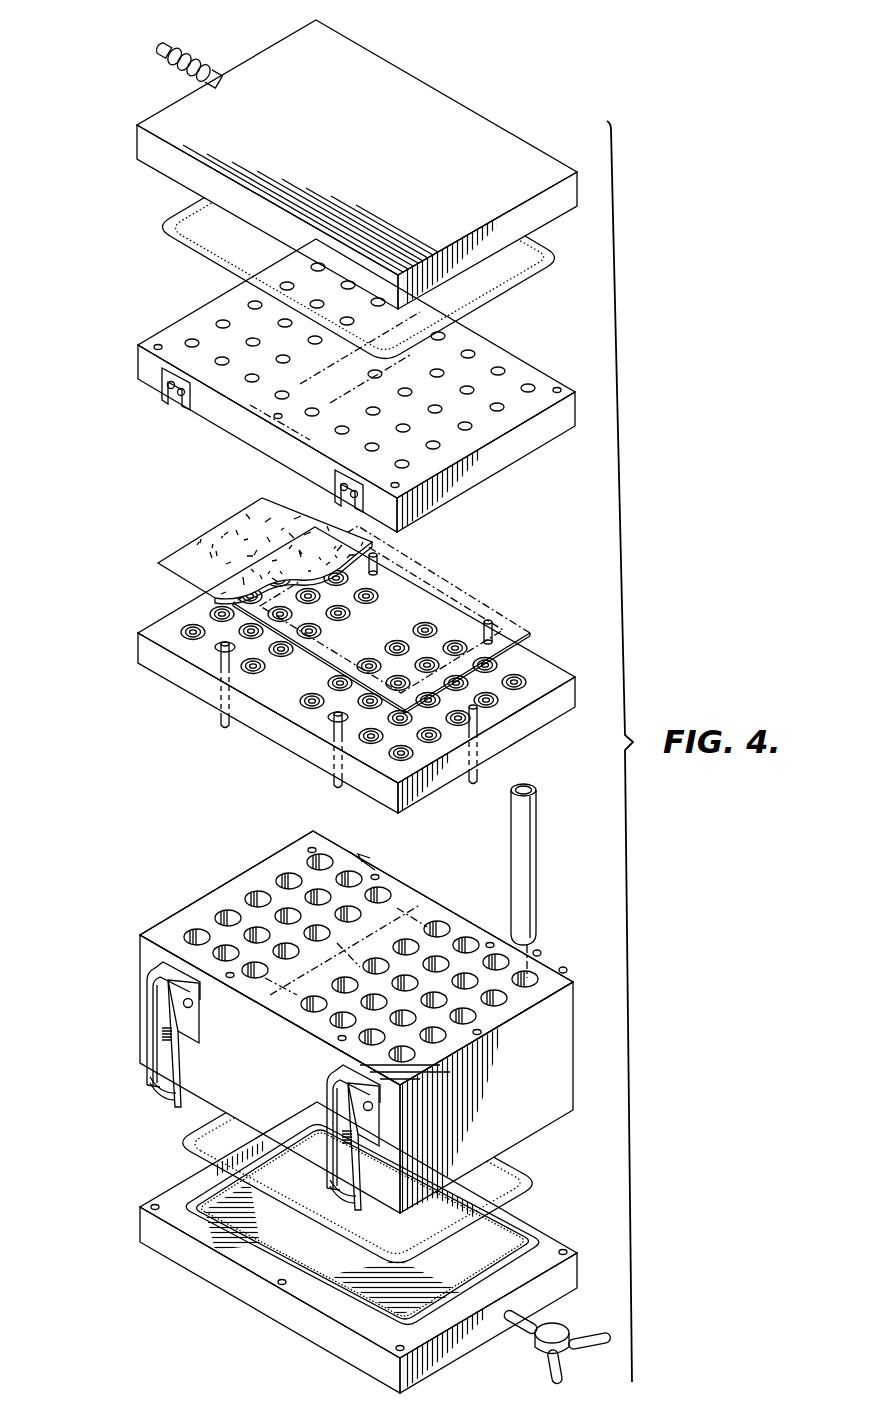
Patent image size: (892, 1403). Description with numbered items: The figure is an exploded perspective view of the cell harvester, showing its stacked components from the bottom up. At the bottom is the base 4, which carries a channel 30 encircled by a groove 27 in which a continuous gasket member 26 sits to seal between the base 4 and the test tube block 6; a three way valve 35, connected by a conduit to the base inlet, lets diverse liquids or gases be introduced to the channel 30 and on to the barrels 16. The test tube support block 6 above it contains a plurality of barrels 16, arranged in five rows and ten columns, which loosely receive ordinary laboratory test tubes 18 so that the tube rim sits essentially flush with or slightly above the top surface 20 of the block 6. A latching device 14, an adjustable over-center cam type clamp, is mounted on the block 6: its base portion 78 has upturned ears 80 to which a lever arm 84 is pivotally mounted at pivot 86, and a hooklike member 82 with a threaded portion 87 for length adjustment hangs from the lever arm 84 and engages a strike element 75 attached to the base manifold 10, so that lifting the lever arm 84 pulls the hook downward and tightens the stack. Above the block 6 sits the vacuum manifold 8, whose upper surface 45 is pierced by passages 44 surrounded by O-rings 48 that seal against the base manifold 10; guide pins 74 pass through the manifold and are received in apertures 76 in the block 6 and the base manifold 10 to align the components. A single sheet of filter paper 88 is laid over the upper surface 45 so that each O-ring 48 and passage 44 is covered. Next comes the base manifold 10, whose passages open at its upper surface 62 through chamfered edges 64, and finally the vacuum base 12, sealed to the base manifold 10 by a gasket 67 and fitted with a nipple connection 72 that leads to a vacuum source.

The base 4 is at (138, 1221).
The test tube support block 6 is at (527, 1083).
The vacuum manifold 8 is at (137, 645).
The base manifold 10 is at (137, 350).
The vacuum base 12 is at (340, 106).
The latching device 14 is at (237, 1076).
The barrels 16 is at (195, 928).
The test tube 18 is at (530, 836).
The top surface of the block 20 is at (217, 897).
The gasket member 26 is at (535, 1176).
The groove 27 is at (552, 1240).
The channel 30 is at (518, 1230).
The three way valve 35 is at (563, 1327).
The passage 44 is at (528, 683).
The upper surface of the vacuum manifold 45 is at (160, 625).
The O-rings 48 is at (520, 678).
The upper surface of the base manifold 62 is at (523, 372).
The chamfered edge 64 is at (500, 365).
The gasket 67 is at (554, 255).
The nipple connection 72 is at (158, 58).
The guide pins 74 is at (222, 724).
The strike element 75 is at (162, 400).
The apertures 76 is at (560, 388).
The base portion 78 is at (165, 964).
The upturned ears 80 is at (190, 1030).
The hooklike member 82 is at (162, 1094).
The lever arm 84 is at (183, 1074).
The pivot 86 is at (194, 1004).
The threaded portion 87 is at (162, 1034).
The filter paper 88 is at (518, 620).